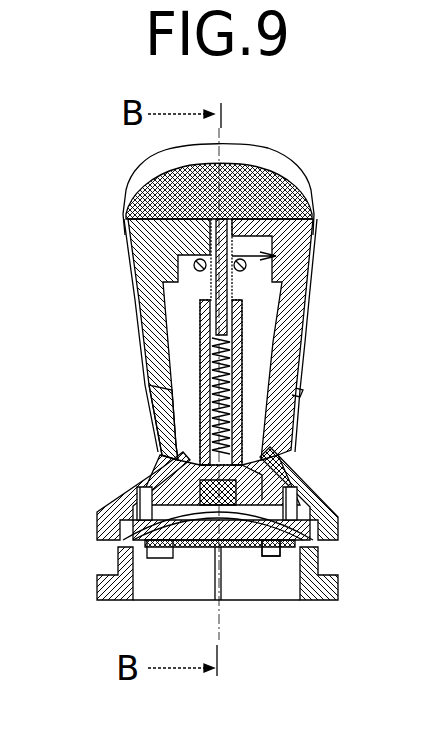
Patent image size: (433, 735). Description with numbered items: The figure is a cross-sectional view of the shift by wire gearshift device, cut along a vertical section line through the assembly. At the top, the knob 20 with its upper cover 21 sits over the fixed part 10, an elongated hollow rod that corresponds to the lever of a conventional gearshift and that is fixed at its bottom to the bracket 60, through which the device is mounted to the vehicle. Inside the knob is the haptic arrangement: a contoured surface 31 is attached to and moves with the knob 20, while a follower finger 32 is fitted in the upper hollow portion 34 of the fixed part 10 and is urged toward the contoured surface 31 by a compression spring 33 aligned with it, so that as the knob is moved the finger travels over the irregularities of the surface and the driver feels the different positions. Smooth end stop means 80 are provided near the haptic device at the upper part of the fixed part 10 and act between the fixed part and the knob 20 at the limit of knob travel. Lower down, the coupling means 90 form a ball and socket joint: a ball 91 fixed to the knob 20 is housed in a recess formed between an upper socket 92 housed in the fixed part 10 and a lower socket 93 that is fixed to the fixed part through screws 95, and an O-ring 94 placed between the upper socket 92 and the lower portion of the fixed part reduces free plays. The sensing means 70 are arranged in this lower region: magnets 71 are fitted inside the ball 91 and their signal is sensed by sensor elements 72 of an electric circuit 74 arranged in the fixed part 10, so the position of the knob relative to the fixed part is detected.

The fixed part 10 is at (186, 402).
The knob 20 is at (177, 336).
The upper cover 21 is at (150, 162).
The contoured surface 31 is at (130, 238).
The follower finger 32 is at (308, 199).
The compression spring 33 is at (205, 357).
The upper hollow portion 34 is at (200, 338).
The bracket 60 is at (92, 590).
The sensing means 70 is at (248, 560).
The magnets 71 is at (140, 482).
The sensor elements 72 is at (140, 537).
The electric circuit 74 is at (268, 560).
The smooth end stop means 80 is at (248, 262).
The coupling means 90 is at (300, 392).
The ball 91 is at (290, 478).
The upper socket 92 is at (172, 470).
The lower socket 93 is at (300, 536).
The O-ring 94 is at (266, 458).
The screws 95 is at (110, 500).